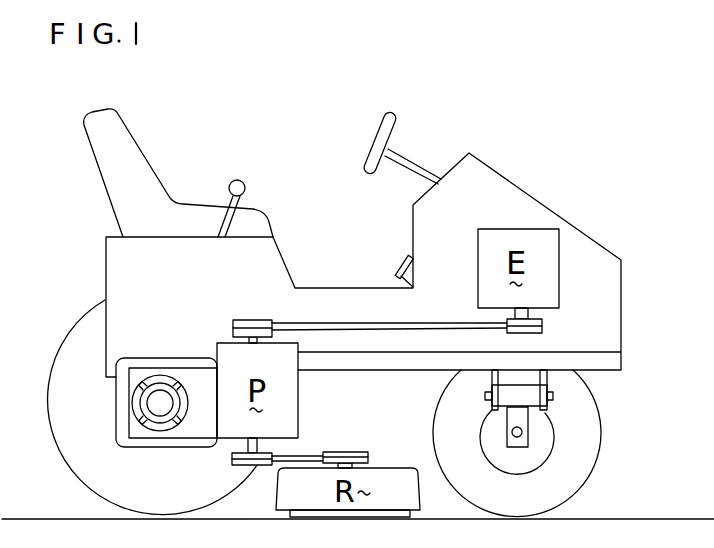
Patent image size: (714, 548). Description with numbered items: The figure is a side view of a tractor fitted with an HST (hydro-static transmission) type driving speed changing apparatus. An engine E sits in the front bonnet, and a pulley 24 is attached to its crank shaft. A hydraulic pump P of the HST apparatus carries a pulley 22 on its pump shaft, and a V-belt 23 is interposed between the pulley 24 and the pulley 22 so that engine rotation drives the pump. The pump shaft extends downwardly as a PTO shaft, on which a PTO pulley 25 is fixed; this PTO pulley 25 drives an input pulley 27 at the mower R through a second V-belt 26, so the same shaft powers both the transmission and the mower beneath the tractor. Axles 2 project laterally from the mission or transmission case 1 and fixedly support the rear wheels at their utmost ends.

The transmission case 1 is at (116, 425).
The axle 2 is at (163, 400).
The pulley 22 is at (262, 320).
The V-belt 23 is at (417, 322).
The pulley 24 is at (543, 334).
The PTO pulley 25 is at (240, 468).
The V-belt 26 is at (308, 455).
The input pulley 27 is at (360, 450).